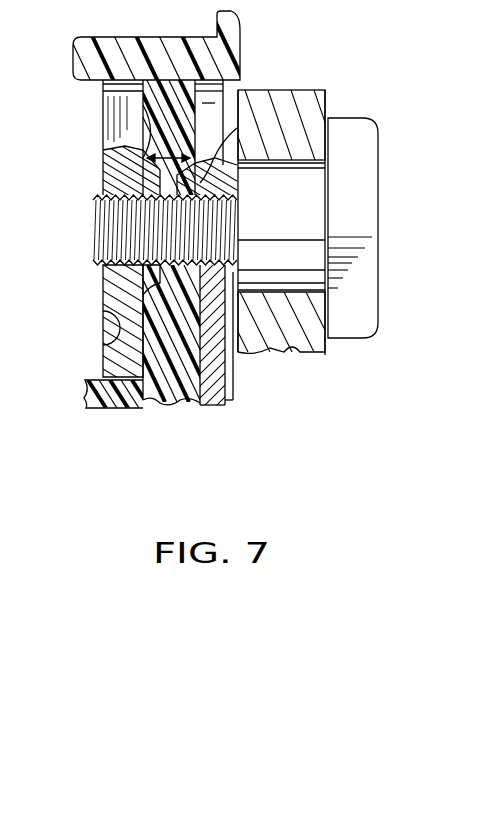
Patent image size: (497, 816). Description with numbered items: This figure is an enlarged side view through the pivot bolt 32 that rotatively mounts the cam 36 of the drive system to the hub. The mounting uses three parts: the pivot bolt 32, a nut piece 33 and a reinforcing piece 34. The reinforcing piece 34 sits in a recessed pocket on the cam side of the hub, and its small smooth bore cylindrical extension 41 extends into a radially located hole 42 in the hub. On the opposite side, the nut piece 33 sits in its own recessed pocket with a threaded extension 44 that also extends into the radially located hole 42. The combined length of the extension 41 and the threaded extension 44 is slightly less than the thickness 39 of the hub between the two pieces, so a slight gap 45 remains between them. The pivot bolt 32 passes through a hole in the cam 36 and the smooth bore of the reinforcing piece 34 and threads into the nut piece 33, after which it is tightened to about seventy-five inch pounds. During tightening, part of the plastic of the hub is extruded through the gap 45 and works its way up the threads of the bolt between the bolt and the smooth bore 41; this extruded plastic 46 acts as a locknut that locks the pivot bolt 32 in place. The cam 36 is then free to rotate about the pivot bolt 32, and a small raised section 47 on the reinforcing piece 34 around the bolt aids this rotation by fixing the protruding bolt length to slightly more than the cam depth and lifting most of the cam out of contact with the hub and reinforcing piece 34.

The pivot bolt 32 is at (267, 212).
The nut piece 33 is at (117, 360).
The reinforcing piece 34 is at (213, 395).
The cam 36 is at (293, 343).
The thickness of the hub 39 is at (154, 78).
The smooth bore cylindrical extension 41 is at (157, 407).
The radially located hole 42 is at (187, 370).
The threaded extension 44 is at (150, 293).
The gap 45 is at (155, 183).
The extruded plastic 46 is at (226, 122).
The raised section 47 is at (233, 275).